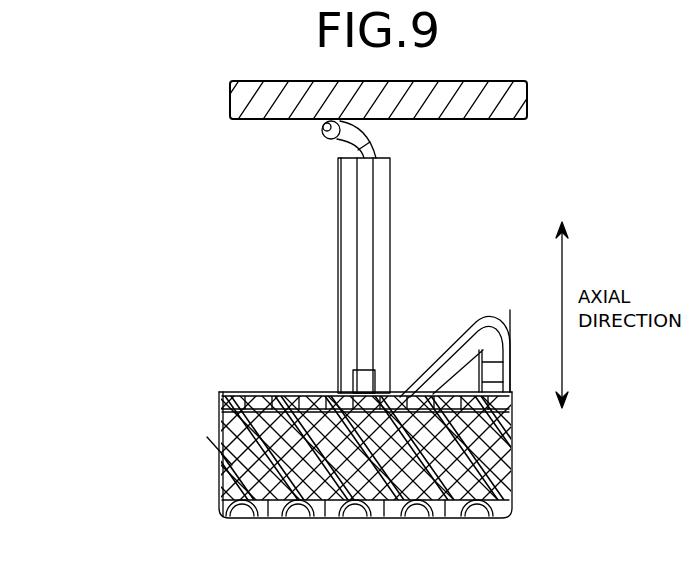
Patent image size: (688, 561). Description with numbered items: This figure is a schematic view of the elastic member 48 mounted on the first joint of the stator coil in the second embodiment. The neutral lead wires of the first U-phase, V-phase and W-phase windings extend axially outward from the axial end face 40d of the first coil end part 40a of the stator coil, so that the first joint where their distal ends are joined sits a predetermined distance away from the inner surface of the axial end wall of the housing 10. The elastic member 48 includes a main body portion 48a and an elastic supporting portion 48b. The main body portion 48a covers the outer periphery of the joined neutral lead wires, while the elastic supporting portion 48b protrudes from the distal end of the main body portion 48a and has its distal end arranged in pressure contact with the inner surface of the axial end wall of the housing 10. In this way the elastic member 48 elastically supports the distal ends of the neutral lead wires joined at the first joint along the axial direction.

The housing 10 is at (443, 120).
The elastic member 48 is at (214, 192).
The main body portion 48a is at (338, 250).
The elastic supporting portion 48b is at (328, 141).
The axial end face 40d is at (262, 390).
The first coil end part 40a is at (222, 450).